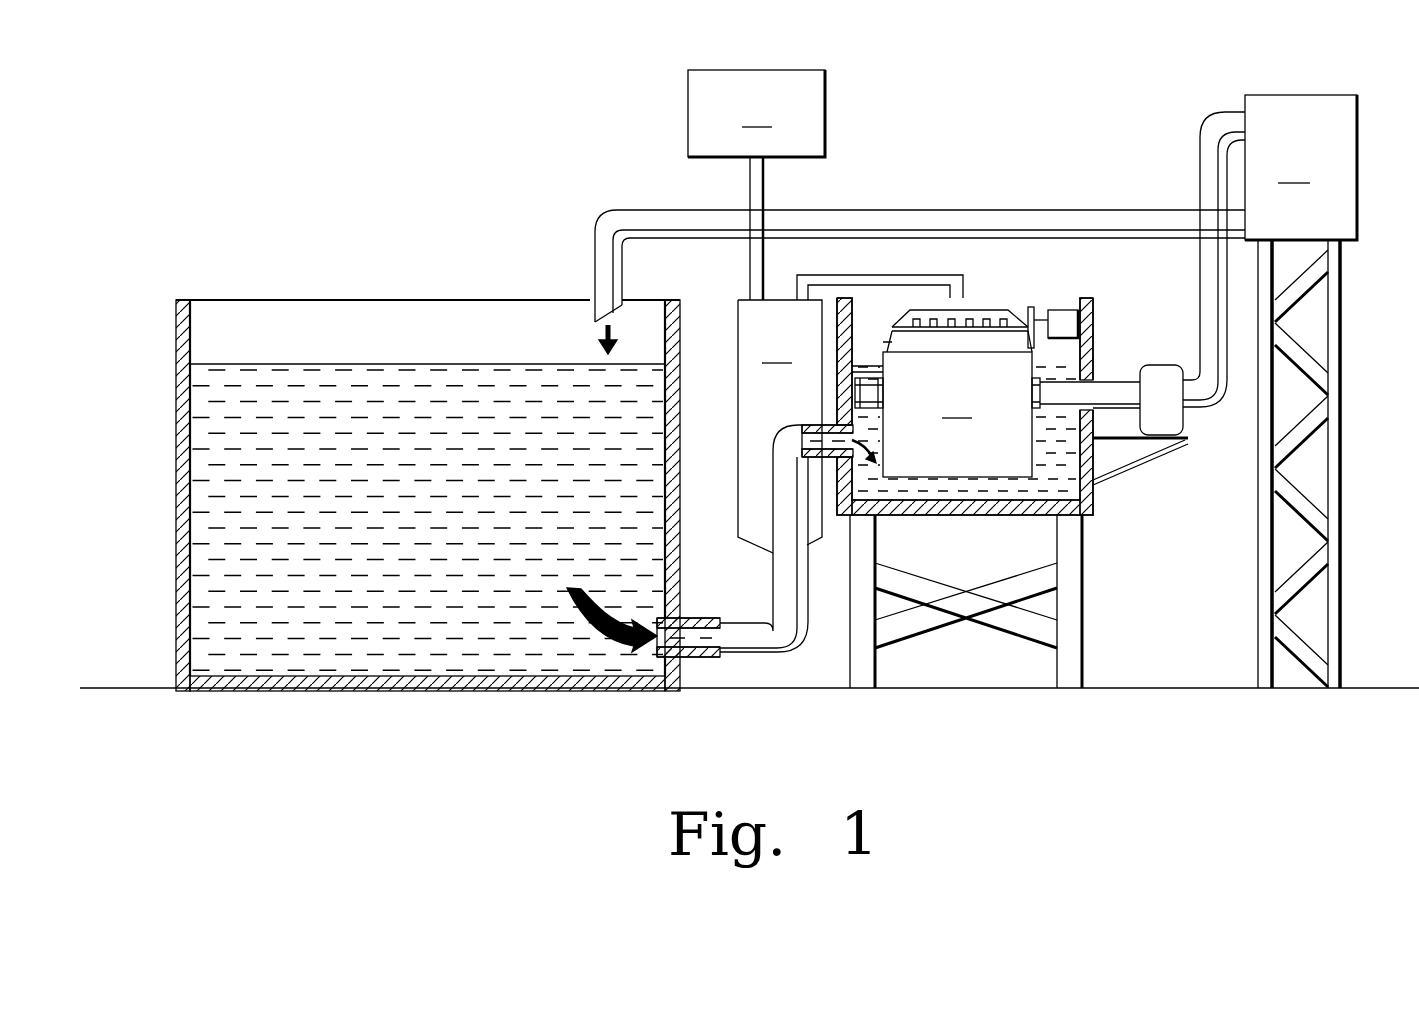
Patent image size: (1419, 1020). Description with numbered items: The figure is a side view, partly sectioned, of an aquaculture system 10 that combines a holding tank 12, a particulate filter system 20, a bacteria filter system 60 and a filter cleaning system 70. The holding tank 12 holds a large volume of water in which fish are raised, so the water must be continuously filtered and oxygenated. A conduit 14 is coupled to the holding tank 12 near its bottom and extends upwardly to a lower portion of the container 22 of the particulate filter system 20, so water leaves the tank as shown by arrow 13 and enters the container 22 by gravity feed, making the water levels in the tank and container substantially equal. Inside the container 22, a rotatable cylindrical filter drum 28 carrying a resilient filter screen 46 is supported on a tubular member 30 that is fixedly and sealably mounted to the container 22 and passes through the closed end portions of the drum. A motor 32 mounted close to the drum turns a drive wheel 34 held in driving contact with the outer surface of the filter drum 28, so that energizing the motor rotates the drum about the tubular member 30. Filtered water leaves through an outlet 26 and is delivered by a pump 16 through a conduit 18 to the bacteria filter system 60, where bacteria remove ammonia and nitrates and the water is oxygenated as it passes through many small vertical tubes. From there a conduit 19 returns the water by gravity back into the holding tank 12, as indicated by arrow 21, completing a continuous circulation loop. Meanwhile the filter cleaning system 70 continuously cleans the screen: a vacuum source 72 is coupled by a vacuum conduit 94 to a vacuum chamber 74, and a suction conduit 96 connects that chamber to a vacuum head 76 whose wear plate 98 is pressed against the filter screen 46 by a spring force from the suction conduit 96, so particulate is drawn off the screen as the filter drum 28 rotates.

The aquaculture system 10 is at (320, 154).
The holding tank 12 is at (176, 425).
The arrow 13 is at (597, 627).
The conduit 14 is at (760, 655).
The pump 16 is at (1184, 420).
The conduit 18 is at (1199, 138).
The conduit 19 is at (1073, 208).
The particulate filter system 20 is at (990, 180).
The arrow 21 is at (600, 340).
The container 22 is at (1095, 330).
The outlet 26 is at (1095, 378).
The filter drum 28 is at (957, 414).
The tubular member 30 is at (858, 378).
The motor 32 is at (1062, 303).
The drive wheel 34 is at (1037, 308).
The filter screen 46 is at (932, 452).
The bacteria filter system 60 is at (1301, 391).
The filter cleaning system 70 is at (862, 106).
The vacuum source 72 is at (756, 113).
The vacuum chamber 74 is at (780, 426).
The vacuum head 76 is at (972, 298).
The vacuum conduit 94 is at (767, 185).
The suction conduit 96 is at (845, 265).
The wear plate 98 is at (994, 342).